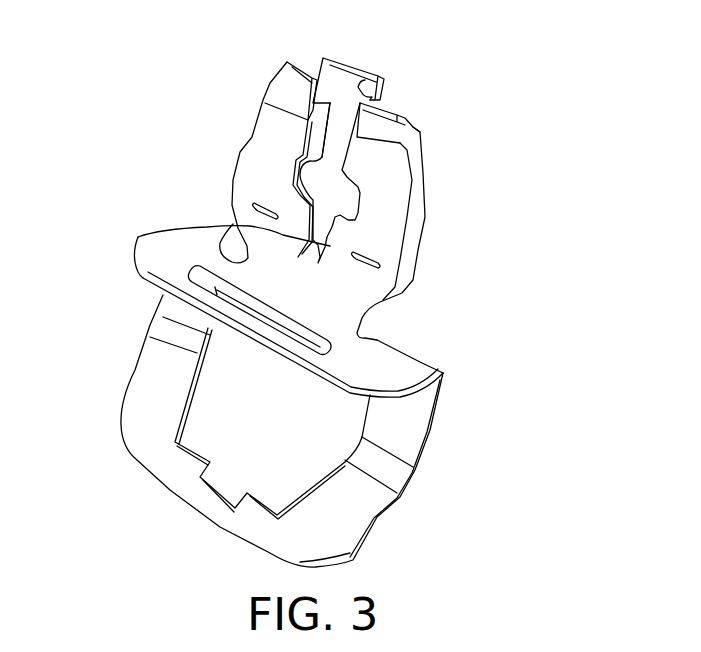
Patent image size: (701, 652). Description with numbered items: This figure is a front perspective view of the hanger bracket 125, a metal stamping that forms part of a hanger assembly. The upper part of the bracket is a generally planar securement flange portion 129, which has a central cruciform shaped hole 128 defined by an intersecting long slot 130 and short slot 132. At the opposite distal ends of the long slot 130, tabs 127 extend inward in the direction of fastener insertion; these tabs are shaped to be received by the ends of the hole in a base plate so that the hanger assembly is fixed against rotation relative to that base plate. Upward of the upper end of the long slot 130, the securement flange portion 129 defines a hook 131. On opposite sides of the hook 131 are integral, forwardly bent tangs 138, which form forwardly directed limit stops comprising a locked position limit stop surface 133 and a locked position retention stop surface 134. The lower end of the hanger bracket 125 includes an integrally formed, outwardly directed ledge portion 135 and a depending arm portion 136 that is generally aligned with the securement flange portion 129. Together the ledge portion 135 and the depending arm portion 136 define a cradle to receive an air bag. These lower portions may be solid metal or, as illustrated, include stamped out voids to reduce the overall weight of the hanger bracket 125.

The hanger bracket 125 is at (302, 56).
The tabs 127 is at (140, 236).
The central cruciform shaped hole 128 is at (333, 177).
The securement flange portion 129 is at (425, 253).
The long slot 130 is at (340, 137).
The hook 131 is at (368, 94).
The short slot 132 is at (300, 176).
The locked position limit stop surface 133 is at (390, 126).
The locked position retention stop surface 134 is at (316, 88).
The ledge portion 135 is at (395, 363).
The depending arm portion 136 is at (403, 422).
The tangs 138 is at (285, 83).